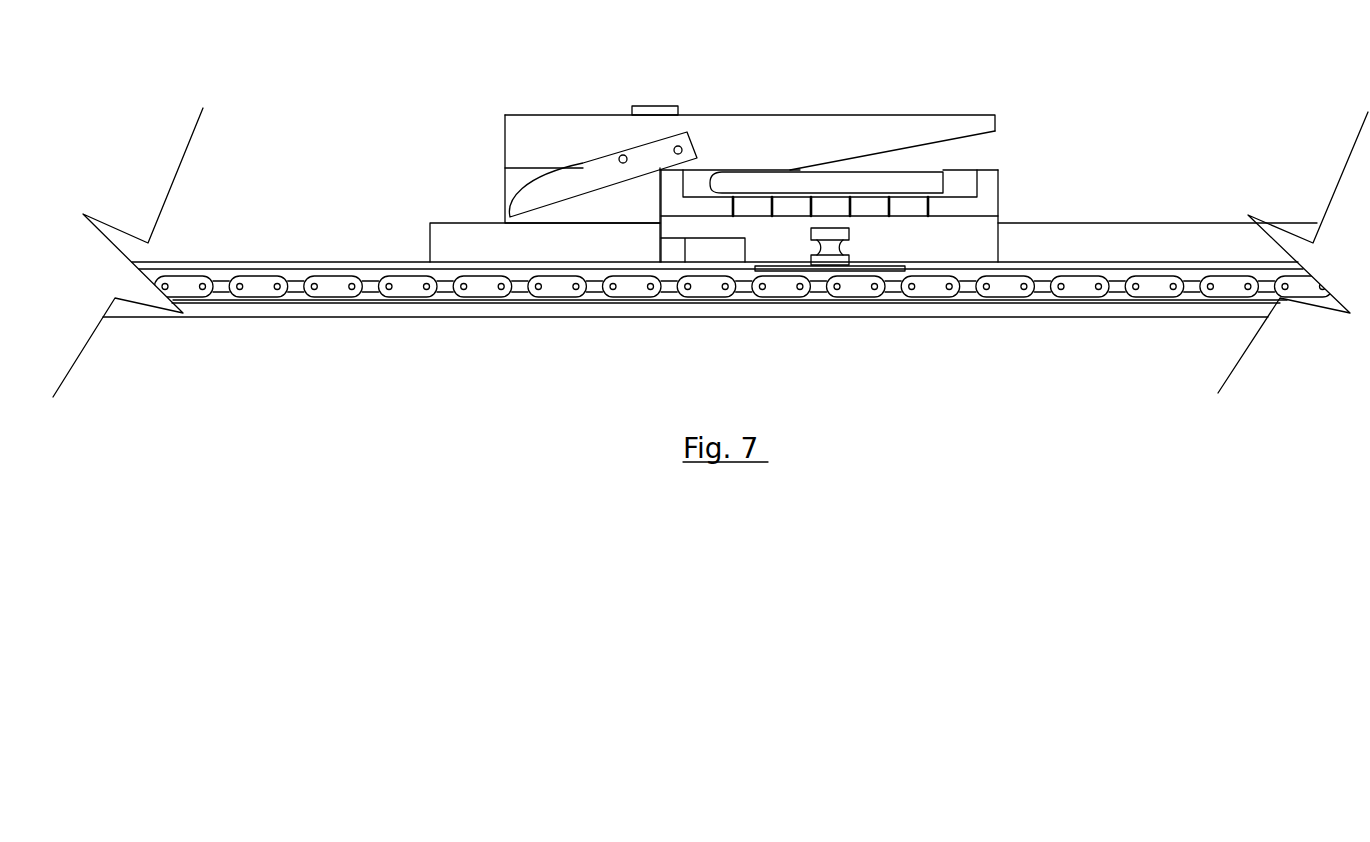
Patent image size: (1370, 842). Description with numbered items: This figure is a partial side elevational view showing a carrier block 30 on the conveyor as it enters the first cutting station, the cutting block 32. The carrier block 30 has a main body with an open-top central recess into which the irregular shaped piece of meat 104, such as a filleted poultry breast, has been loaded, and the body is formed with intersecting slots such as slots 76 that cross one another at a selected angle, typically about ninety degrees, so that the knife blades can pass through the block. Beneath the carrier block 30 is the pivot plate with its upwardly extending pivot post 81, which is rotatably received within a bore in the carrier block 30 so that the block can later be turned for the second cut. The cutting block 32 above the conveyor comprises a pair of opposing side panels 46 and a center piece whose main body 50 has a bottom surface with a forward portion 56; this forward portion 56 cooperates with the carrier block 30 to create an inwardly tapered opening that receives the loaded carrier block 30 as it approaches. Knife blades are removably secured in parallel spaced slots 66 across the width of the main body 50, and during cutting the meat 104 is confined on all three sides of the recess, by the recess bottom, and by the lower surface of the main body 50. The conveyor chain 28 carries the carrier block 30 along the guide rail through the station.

The conveyor chain 28 is at (1083, 293).
The carrier block 30 is at (998, 178).
The cutting block 32 is at (923, 100).
The side panels 46 is at (503, 174).
The main body 50 is at (773, 114).
The forward portion 56 is at (968, 143).
The slots 66 is at (583, 162).
The slots 76 is at (930, 202).
The pivot post 81 is at (849, 239).
The meat 104 is at (938, 170).